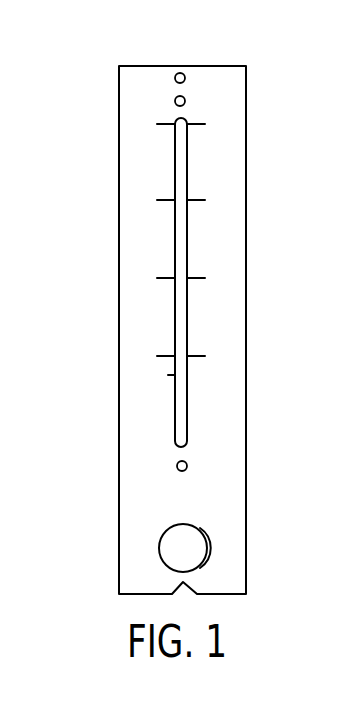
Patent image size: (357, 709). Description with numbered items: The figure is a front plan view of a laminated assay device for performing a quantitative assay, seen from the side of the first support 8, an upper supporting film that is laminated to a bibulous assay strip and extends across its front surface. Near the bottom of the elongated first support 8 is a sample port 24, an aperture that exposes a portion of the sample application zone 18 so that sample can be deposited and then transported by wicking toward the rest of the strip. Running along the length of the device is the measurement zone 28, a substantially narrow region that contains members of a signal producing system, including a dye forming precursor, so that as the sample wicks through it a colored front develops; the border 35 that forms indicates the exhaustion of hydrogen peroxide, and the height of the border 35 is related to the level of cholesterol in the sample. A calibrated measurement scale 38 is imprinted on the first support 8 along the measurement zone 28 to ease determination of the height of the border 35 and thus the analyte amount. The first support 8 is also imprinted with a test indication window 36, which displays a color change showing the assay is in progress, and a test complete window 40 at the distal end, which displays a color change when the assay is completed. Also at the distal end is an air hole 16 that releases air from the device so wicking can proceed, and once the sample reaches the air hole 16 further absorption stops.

The first support 8 is at (235, 117).
The air hole 16 is at (178, 73).
The test complete window 40 is at (174, 101).
The measurement zone 28 is at (176, 223).
The border 35 is at (178, 192).
The calibrated measurement scale 38 is at (188, 357).
The test indication window 36 is at (176, 461).
The sample application zone 18 is at (175, 550).
The sample port 24 is at (198, 552).